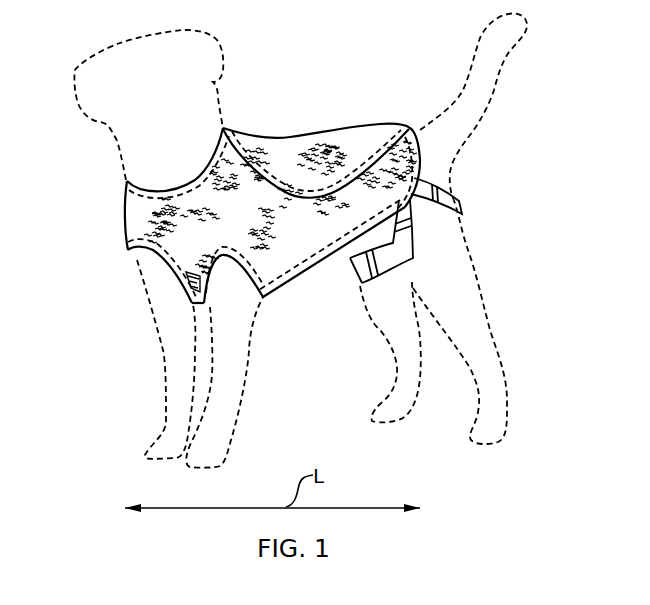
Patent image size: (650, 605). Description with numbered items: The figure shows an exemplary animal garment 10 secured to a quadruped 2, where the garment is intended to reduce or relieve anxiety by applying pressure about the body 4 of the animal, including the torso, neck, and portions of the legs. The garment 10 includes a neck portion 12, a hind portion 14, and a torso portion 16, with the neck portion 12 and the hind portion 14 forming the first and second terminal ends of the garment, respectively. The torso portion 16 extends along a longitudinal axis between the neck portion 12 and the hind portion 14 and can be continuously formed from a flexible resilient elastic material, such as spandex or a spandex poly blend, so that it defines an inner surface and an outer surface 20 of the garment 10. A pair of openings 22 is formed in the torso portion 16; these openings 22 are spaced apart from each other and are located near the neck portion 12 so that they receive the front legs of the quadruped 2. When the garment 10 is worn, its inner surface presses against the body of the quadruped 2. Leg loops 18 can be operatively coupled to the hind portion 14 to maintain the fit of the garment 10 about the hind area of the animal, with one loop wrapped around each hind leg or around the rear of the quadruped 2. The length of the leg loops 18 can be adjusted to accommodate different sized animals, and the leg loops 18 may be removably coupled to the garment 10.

The quadruped 2 is at (92, 60).
The body 4 is at (456, 258).
The animal garment 10 is at (399, 50).
The neck portion 12 is at (125, 187).
The hind portion 14 is at (413, 121).
The torso portion 16 is at (327, 273).
The leg loops 18 is at (467, 202).
The outer surface 20 is at (126, 222).
The openings 22 is at (119, 252).